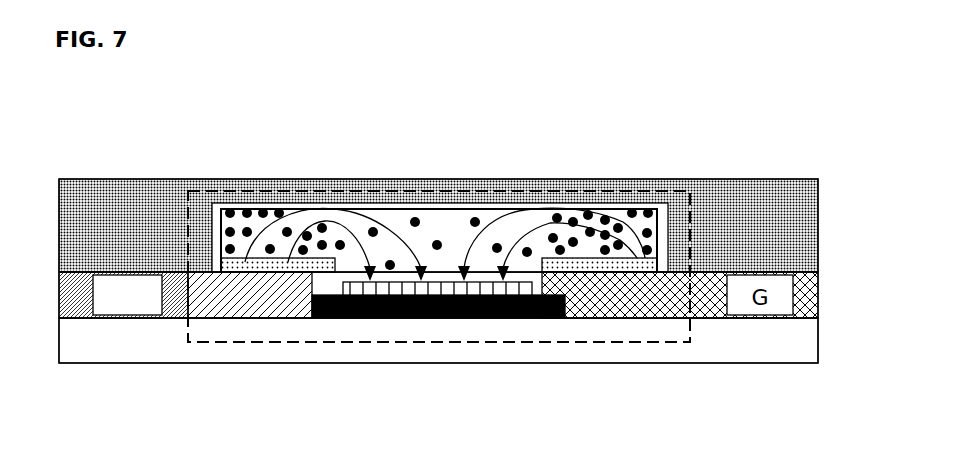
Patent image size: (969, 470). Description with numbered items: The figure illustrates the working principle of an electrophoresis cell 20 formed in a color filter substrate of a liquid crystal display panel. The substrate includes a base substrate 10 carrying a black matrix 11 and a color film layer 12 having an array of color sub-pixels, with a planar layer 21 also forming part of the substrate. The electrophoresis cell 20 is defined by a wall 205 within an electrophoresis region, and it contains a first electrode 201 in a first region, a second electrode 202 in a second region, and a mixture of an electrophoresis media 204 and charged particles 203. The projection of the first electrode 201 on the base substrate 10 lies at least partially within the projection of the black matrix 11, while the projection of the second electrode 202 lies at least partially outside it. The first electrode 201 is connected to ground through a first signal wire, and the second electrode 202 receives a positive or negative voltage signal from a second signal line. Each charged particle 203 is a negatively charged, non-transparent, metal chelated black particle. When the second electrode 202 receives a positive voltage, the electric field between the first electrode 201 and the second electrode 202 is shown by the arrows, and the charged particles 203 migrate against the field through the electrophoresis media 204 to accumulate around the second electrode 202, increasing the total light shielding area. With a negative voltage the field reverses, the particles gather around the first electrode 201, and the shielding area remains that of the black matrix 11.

The base substrate 10 is at (688, 363).
The black matrix 11 is at (380, 318).
The color film layer 12 is at (103, 318).
The electrophoresis cell 20 is at (240, 342).
The planar layer 21 is at (745, 180).
The first electrode 201 is at (450, 282).
The second electrode 202 is at (593, 262).
The charged particle 203 is at (417, 218).
The electrophoresis media 204 is at (440, 220).
The wall 205 is at (208, 238).